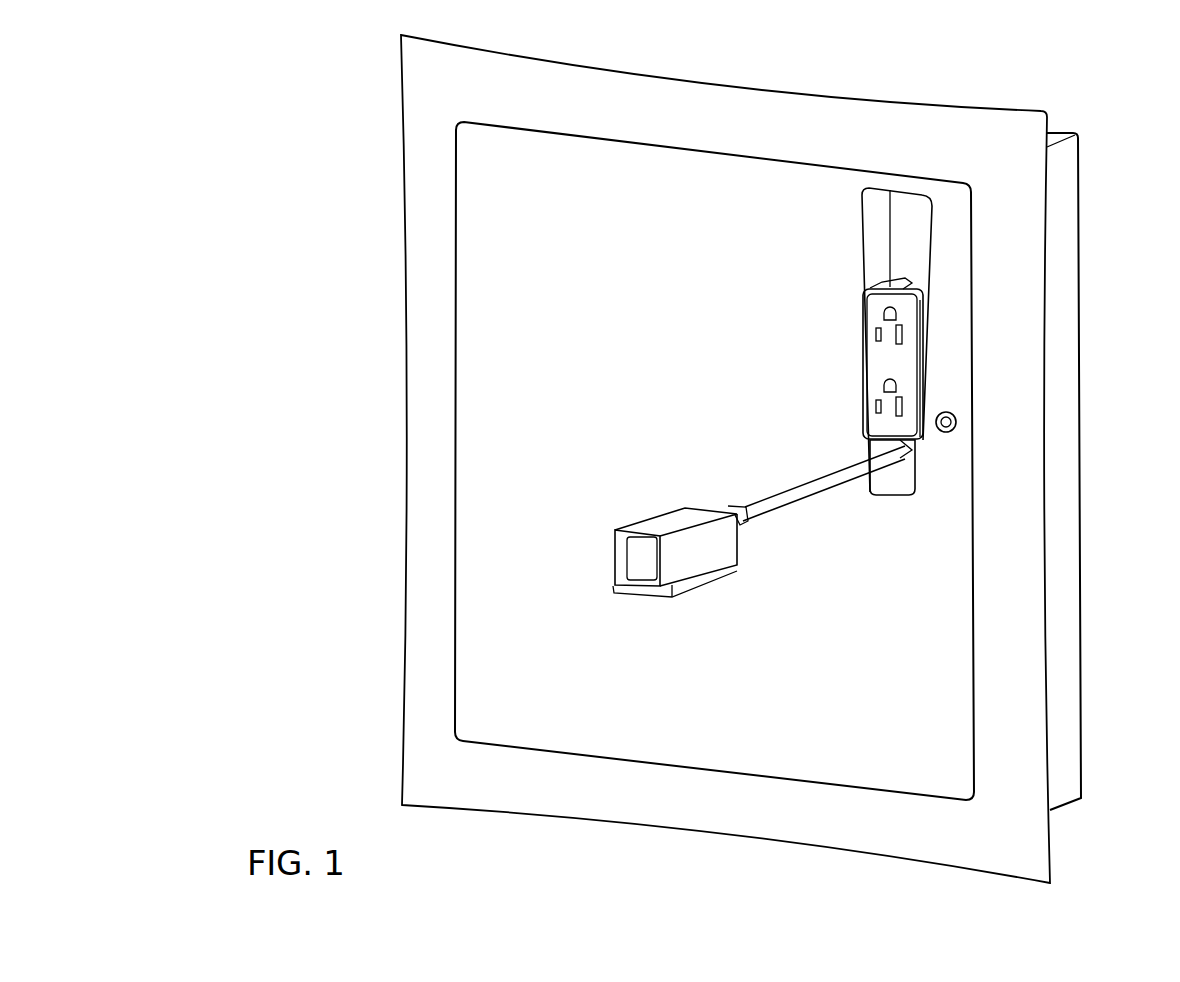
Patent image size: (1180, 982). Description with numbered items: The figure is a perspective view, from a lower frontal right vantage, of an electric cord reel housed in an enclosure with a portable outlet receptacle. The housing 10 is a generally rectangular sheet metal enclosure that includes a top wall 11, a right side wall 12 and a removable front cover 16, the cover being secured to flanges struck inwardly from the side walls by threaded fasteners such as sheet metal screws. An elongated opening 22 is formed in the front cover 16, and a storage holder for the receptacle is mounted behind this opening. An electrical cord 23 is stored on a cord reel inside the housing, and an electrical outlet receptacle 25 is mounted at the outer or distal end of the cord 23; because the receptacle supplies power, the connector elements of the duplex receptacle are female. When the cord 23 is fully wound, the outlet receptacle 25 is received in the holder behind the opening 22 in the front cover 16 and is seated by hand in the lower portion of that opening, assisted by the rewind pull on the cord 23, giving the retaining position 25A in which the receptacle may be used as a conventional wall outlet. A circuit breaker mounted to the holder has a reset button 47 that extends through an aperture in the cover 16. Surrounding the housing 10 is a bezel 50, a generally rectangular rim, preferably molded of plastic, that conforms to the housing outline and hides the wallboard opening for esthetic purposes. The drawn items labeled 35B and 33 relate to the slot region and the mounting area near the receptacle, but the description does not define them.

The bezel 50 is at (426, 145).
The top wall 11 is at (1052, 132).
The right side wall 12 is at (1058, 513).
The housing 10 is at (500, 660).
The front cover 16 is at (813, 679).
The slot 35B is at (890, 230).
The retaining position of outlet receptacle 25A is at (886, 362).
The elongated opening 22 is at (923, 379).
The mounting bracket 33 is at (893, 487).
The reset button 47 is at (945, 432).
The electrical cord 23 is at (782, 503).
The outlet receptacle 25 is at (663, 532).